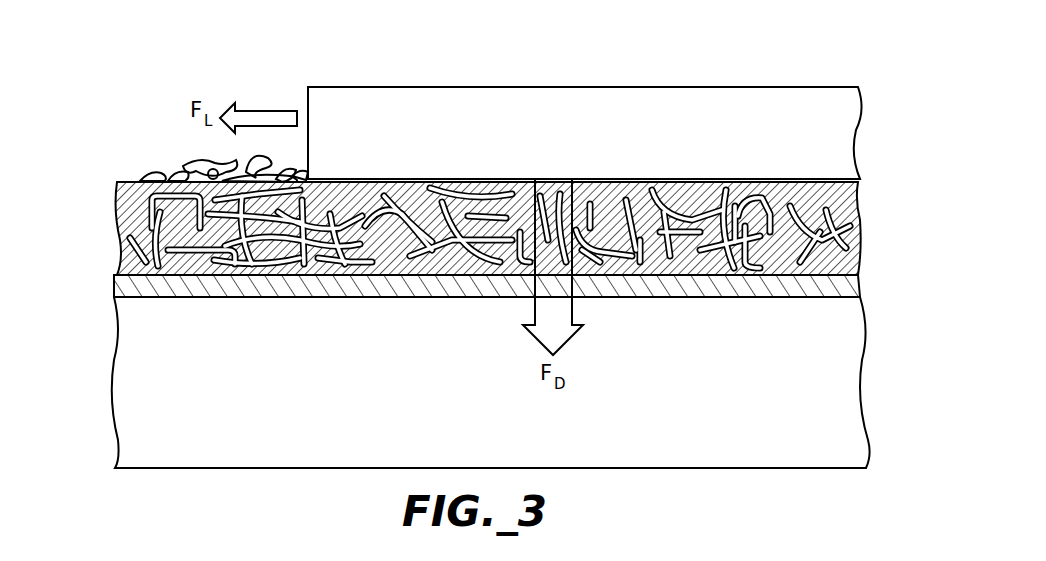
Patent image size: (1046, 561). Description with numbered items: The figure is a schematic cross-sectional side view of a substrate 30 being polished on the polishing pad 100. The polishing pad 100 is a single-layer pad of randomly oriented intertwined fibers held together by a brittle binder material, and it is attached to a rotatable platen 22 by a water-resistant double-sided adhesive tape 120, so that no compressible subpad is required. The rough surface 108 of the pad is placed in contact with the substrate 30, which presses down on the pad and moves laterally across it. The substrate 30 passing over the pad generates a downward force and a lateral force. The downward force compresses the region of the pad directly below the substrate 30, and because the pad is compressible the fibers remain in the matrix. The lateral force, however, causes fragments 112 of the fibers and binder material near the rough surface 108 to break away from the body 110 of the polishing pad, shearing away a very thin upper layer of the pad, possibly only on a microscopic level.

The rotatable platen 22 is at (132, 399).
The substrate 30 is at (333, 87).
The polishing pad 100 is at (128, 246).
The rough surface 108 is at (242, 178).
The body of the polishing pad 110 is at (120, 222).
The fragments 112 is at (182, 160).
The double-sided adhesive tape 120 is at (128, 286).